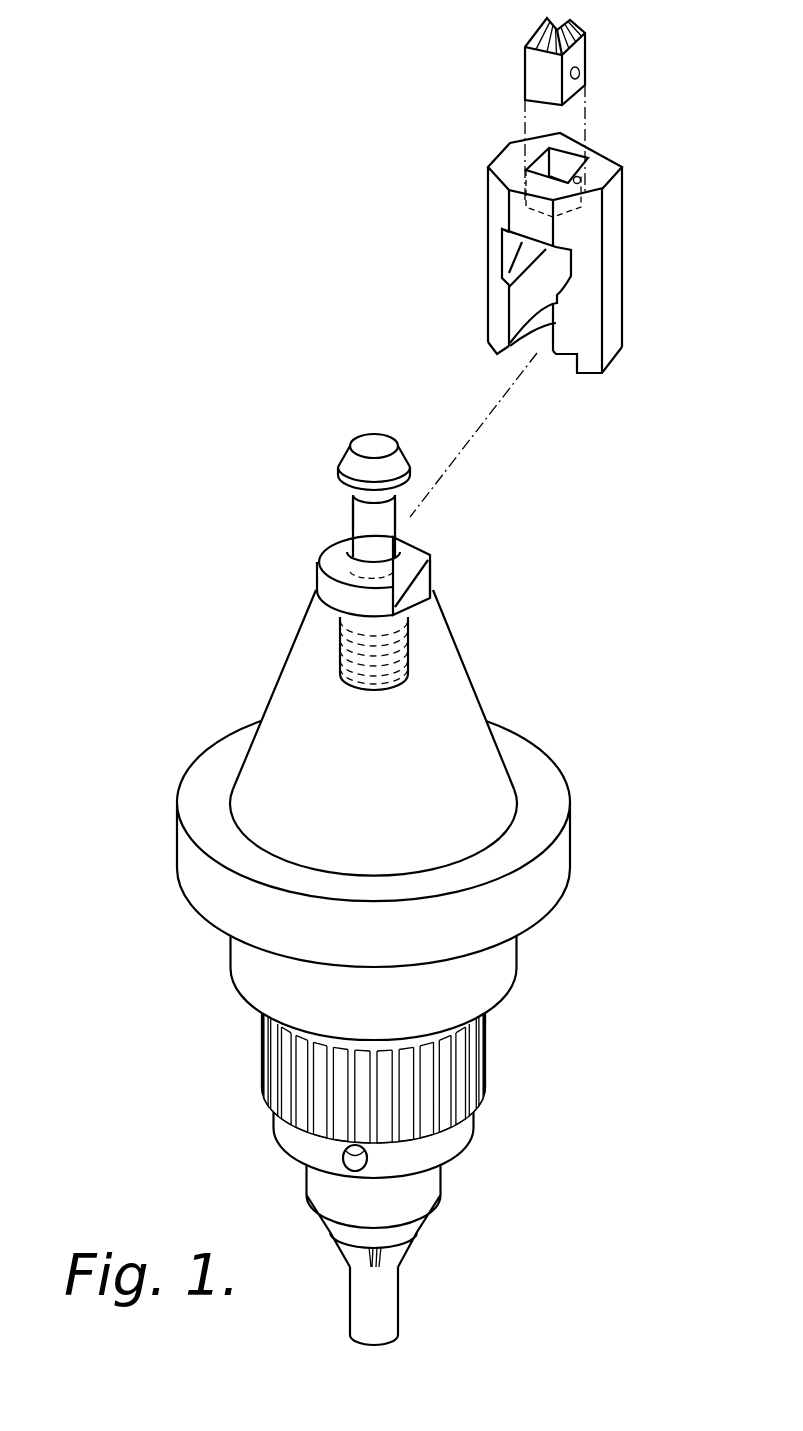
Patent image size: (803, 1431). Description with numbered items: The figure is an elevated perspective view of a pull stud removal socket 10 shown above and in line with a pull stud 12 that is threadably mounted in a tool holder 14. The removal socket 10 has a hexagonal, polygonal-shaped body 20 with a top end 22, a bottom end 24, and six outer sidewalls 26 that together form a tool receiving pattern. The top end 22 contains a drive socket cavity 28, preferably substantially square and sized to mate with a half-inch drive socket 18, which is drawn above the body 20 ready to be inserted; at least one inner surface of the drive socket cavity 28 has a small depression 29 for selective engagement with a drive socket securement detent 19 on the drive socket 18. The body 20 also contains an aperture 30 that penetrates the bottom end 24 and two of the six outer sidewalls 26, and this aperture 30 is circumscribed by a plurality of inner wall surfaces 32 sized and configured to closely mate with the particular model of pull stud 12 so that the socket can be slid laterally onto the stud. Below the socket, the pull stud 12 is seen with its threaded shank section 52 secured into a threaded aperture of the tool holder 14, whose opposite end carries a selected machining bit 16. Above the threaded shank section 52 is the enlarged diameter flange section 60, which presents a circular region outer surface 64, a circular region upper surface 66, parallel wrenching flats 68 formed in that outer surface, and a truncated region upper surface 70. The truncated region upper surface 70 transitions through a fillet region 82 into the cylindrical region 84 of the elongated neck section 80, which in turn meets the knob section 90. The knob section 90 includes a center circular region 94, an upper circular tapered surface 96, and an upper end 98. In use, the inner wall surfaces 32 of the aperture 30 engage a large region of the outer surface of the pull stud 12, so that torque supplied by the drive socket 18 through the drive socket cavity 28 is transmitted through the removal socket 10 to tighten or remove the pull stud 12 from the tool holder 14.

The pull stud removal socket 10 is at (557, 300).
The pull stud 12 is at (373, 529).
The tool holder 14 is at (576, 840).
The machining bit 16 is at (390, 1298).
The drive socket 18 is at (599, 57).
The drive socket securement detent 19 is at (583, 72).
The body 20 is at (563, 300).
The top end 22 is at (598, 147).
The bottom end 24 is at (607, 364).
The outer sidewalls 26 is at (588, 218).
The drive socket cavity 28 is at (562, 152).
The small depression 29 is at (570, 182).
The aperture 30 is at (544, 345).
The inner wall surfaces 32 is at (520, 297).
The threaded shank section 52 is at (410, 650).
The flange section 60 is at (376, 575).
The circular region outer surface 64 is at (436, 594).
The circular region upper surface 66 is at (433, 582).
The parallel wrenching flats 68 is at (428, 562).
The truncated region upper surface 70 is at (408, 543).
The elongated neck section 80 is at (314, 536).
The fillet region 82 is at (326, 561).
The cylindrical region 84 is at (352, 518).
The knob section 90 is at (382, 429).
The center circular region 94 is at (411, 478).
The upper circular tapered surface 96 is at (399, 462).
The upper end 98 is at (378, 440).